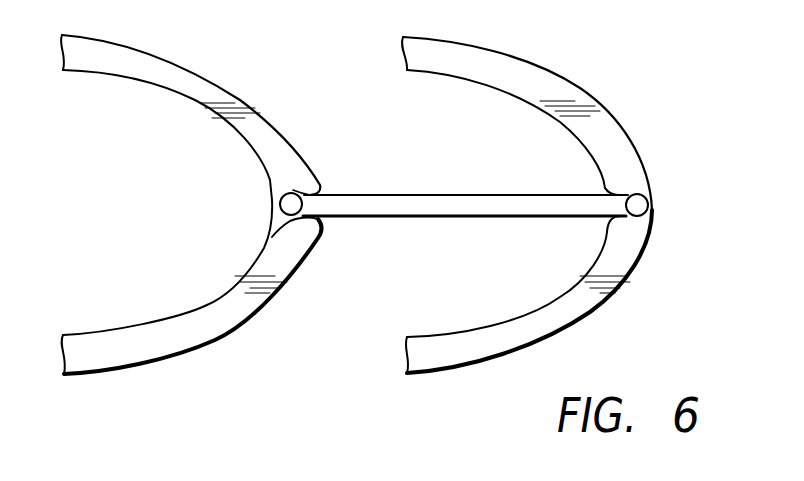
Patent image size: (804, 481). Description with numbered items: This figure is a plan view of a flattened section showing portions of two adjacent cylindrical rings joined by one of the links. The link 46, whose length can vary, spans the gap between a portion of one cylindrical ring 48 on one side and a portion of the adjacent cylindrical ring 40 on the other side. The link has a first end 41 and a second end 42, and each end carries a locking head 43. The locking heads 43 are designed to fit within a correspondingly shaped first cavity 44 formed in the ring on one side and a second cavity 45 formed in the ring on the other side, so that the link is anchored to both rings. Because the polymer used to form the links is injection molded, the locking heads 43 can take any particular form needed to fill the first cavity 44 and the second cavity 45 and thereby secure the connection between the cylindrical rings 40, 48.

The cylindrical ring 40 is at (213, 72).
The first end 41 is at (330, 220).
The second end 42 is at (590, 219).
The locking head 43 is at (288, 200).
The first cavity 44 is at (293, 229).
The second cavity 45 is at (646, 211).
The link 46 is at (368, 195).
The cylindrical ring 48 is at (627, 283).